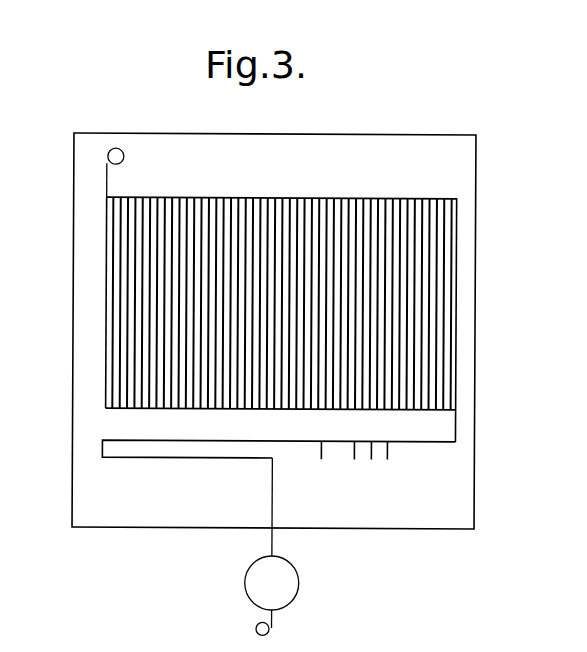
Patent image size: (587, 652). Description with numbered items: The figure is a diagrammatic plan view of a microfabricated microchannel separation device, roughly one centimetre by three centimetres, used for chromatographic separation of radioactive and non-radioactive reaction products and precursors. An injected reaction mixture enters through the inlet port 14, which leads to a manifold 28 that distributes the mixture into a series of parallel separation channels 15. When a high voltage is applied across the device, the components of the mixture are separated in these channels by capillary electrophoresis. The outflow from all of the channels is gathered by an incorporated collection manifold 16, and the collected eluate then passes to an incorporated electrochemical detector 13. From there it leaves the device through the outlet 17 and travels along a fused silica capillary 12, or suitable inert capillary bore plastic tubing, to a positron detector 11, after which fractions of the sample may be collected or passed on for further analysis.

The positron detector 11 is at (268, 587).
The fused silica capillary 12 is at (273, 545).
The electrochemical detector 13 is at (390, 453).
The inlet port 14 is at (114, 149).
The parallel separation channels 15 is at (105, 310).
The collection manifold 16 is at (116, 410).
The outlet 17 is at (271, 633).
The manifold 28 is at (245, 197).